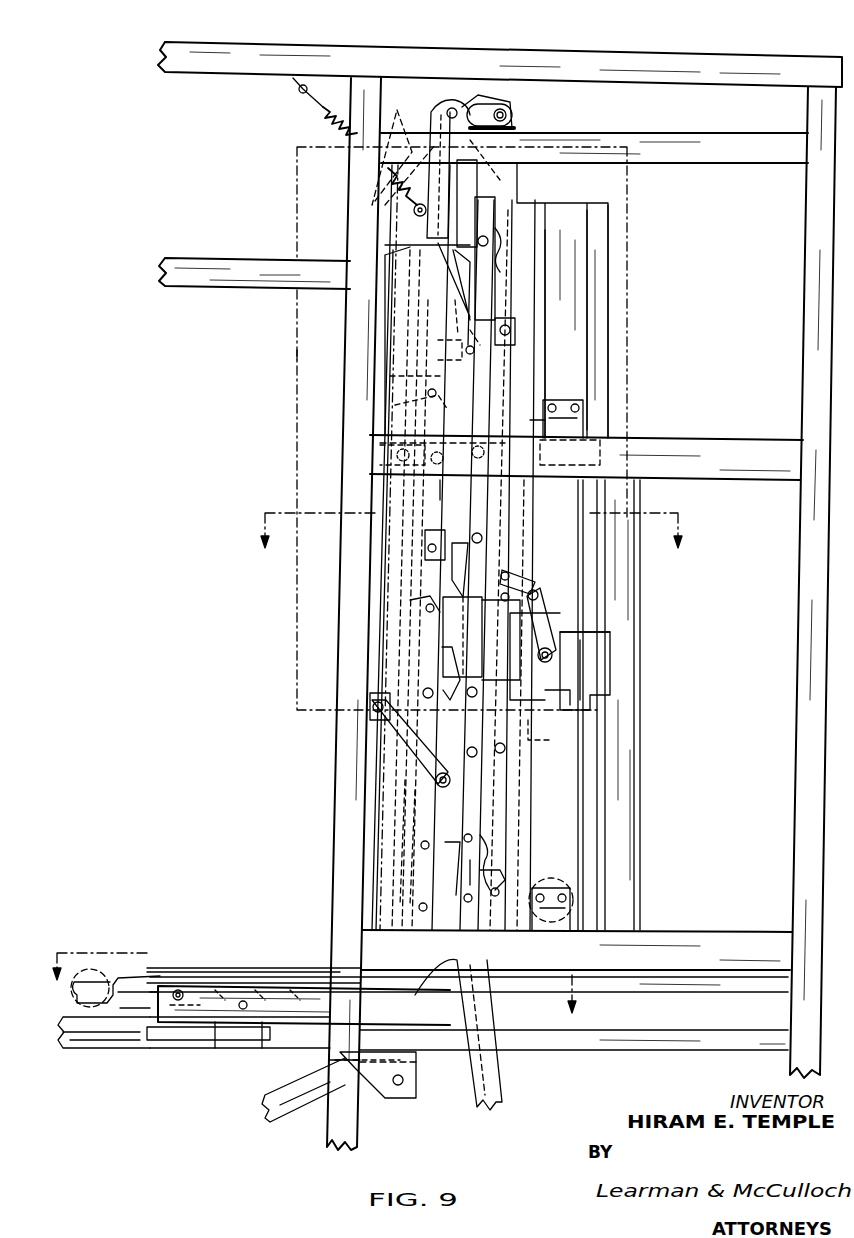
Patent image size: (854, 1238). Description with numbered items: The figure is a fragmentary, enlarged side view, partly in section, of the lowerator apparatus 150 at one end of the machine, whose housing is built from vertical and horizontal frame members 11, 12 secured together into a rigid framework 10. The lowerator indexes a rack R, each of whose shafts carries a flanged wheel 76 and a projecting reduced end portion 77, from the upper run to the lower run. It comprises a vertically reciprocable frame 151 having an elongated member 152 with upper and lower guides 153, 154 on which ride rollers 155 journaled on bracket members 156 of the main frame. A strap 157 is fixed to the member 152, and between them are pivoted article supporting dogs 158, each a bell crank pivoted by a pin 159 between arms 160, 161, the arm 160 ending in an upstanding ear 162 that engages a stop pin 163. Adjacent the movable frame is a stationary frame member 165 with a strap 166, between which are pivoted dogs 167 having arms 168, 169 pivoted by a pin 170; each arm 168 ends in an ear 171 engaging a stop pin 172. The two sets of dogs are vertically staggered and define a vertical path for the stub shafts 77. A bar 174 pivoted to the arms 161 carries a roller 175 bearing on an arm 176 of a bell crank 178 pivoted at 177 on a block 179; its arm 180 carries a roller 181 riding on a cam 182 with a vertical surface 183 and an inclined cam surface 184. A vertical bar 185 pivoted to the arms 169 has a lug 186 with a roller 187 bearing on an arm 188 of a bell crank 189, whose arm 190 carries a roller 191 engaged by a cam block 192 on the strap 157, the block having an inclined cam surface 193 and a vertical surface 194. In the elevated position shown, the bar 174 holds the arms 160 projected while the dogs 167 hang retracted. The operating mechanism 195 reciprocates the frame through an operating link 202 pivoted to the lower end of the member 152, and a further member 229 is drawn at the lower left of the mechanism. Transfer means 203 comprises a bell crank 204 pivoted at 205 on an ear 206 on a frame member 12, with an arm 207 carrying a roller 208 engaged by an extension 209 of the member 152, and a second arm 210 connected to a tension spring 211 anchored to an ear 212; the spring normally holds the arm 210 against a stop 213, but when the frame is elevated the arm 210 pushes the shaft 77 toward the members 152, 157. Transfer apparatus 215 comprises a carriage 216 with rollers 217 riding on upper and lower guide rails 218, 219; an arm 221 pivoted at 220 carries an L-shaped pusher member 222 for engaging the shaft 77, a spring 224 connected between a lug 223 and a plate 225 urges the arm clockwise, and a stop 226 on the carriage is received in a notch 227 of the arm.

The horizontal frame member 12 is at (274, 53).
The framework 10 is at (472, 545).
The vertical frame member 11 is at (314, 994).
The flanged wheel 76 is at (90, 948).
The reduced end portion 77 is at (112, 960).
The lowerator apparatus 150 is at (275, 434).
The rack R is at (297, 348).
The vertically reciprocable frame 151 is at (610, 353).
The elongated member 152 is at (513, 202).
The upper guide 153 is at (603, 255).
The lower guide 154 is at (517, 380).
The roller 155 is at (552, 886).
The bracket member 156 is at (561, 398).
The elongated strap 157 is at (488, 290).
The article supporting dog 158 is at (458, 311).
The pin 159 is at (474, 356).
The arm 160 is at (464, 290).
The arm 161 is at (498, 318).
The upstanding ear 162 is at (496, 250).
The stop pin 163 is at (476, 208).
The stationary frame member 165 is at (425, 530).
The strap 166 is at (386, 372).
The article supporting dog 167 is at (380, 445).
The arm 168 is at (452, 460).
The arm 169 is at (456, 490).
The pin 170 is at (440, 582).
The upstanding ear 171 is at (395, 405).
The stop pin 172 is at (436, 390).
The bar 174 is at (519, 352).
The roller 175 is at (508, 576).
The arm 176 is at (530, 586).
The pivot 177 is at (564, 597).
The bell crank 178 is at (550, 633).
The block 179 is at (560, 588).
The arm 180 is at (545, 656).
The roller 181 is at (545, 689).
The cam 182 is at (610, 636).
The vertical surface 183 is at (600, 672).
The inclined cam surface 184 is at (560, 715).
The vertical bar 185 is at (435, 750).
The lug 186 is at (443, 662).
The roller 187 is at (375, 692).
The arm 188 is at (375, 725).
The bell crank 189 is at (438, 781).
The arm 190 is at (478, 754).
The roller 191 is at (480, 796).
The cam block 192 is at (443, 635).
The inclined cam surface 193 is at (450, 689).
The vertical surface 194 is at (428, 608).
The lowerator operating mechanism 195 is at (518, 1093).
The operating link 202 is at (486, 1074).
The transfer means 203 is at (476, 95).
The bell crank 204 is at (433, 106).
The pivot 205 is at (455, 106).
The ear 206 is at (480, 107).
The arm 207 is at (518, 112).
The roller 208 is at (512, 121).
The extension 209 is at (500, 176).
The arm 210 is at (424, 233).
The tension spring 211 is at (335, 118).
The ear 212 is at (299, 92).
The stop 213 is at (392, 145).
The transfer apparatus 215 is at (428, 1102).
The carriage 216 is at (266, 1040).
The roller 217 is at (170, 965).
The upper guide rail 218 is at (647, 992).
The lower guide rail 219 is at (659, 1050).
The pivot 220 is at (247, 1005).
The arm 221 is at (138, 1048).
The L-shaped pusher member 222 is at (90, 1048).
The lug 223 is at (250, 965).
The spring 224 is at (292, 965).
The plate 225 is at (416, 1076).
The stop 226 is at (210, 965).
The notch 227 is at (215, 1048).
The brace 229 is at (302, 1106).